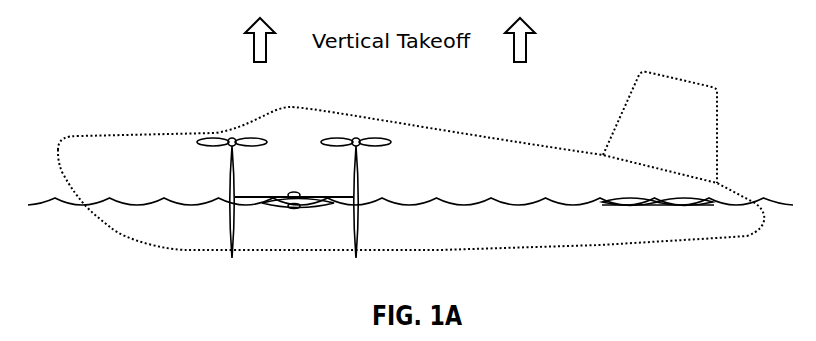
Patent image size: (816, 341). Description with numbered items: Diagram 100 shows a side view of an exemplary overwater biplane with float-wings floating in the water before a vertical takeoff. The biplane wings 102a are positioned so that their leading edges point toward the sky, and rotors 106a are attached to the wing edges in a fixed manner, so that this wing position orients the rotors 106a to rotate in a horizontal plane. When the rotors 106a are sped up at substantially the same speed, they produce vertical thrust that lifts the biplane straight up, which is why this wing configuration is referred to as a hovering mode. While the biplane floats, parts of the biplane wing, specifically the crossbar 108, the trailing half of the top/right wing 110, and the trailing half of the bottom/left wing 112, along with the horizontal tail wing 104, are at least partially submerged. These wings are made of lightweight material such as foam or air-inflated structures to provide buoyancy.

The diagram 100 is at (657, 31).
The biplane wing 102a is at (360, 176).
The horizontal tail wing 104 is at (618, 197).
The rotor 106a is at (216, 138).
The crossbar 108 is at (343, 185).
The trailing half of the top/right wing 110 is at (370, 210).
The trailing half of the bottom/left wing 112 is at (247, 210).